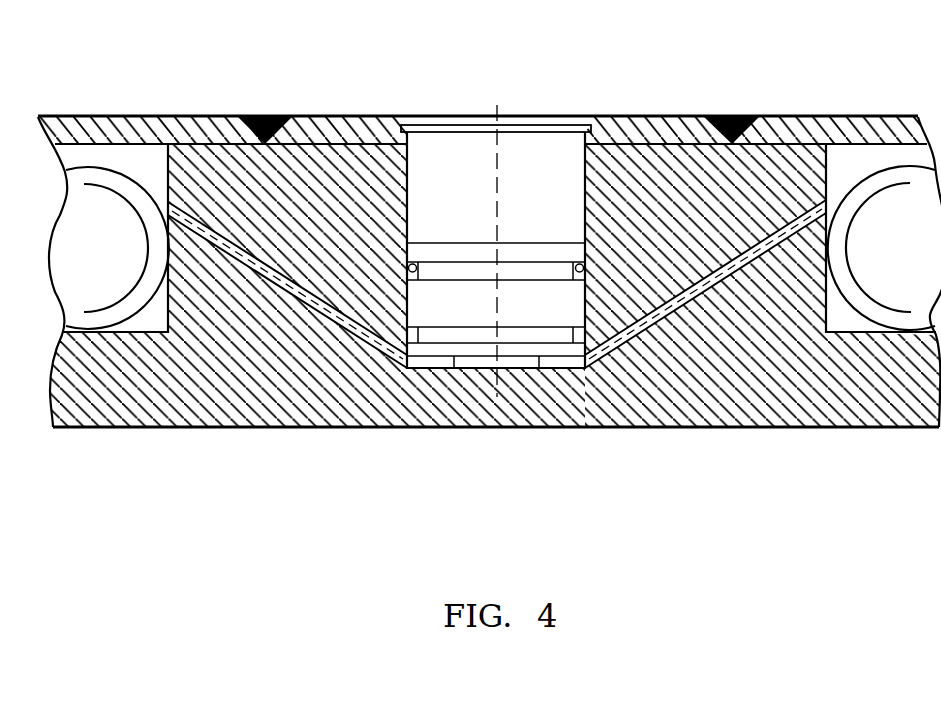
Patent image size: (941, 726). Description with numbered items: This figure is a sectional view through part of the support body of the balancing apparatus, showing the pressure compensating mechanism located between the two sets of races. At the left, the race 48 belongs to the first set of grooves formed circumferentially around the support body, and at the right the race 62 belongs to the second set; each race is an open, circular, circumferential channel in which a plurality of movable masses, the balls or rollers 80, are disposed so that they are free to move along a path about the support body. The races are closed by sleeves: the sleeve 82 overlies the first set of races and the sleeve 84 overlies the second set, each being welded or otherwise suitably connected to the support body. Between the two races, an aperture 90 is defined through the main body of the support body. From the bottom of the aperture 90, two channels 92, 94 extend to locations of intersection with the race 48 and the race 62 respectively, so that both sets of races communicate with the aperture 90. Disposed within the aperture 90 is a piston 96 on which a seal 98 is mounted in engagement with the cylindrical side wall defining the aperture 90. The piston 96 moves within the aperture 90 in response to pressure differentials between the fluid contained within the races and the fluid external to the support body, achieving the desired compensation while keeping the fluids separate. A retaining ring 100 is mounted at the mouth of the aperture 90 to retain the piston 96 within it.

The race 48 is at (142, 160).
The race 62 is at (855, 165).
The balls or rollers 80 is at (108, 210).
The sleeve 82 is at (221, 128).
The sleeve 84 is at (797, 127).
The aperture 90 is at (491, 263).
The channel 92 is at (375, 347).
The channel 94 is at (621, 340).
The piston 96 is at (461, 250).
The seal 98 is at (578, 277).
The retaining ring 100 is at (415, 125).